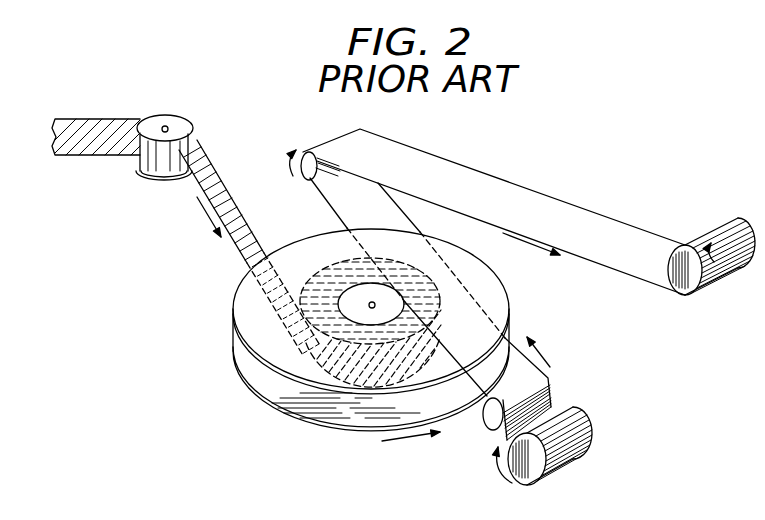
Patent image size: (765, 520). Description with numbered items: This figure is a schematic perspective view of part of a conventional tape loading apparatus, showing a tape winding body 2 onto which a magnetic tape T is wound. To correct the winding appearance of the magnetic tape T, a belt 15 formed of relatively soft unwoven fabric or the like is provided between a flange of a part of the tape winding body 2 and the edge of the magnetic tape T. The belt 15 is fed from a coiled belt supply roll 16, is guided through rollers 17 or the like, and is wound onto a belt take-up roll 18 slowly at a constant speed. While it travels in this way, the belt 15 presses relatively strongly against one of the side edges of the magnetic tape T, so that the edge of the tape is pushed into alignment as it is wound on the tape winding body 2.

The tape winding body 2 is at (271, 370).
The magnetic tape T is at (213, 188).
The belt 15 is at (578, 214).
The coiled belt supply roll 16 is at (577, 460).
The rollers 17 is at (303, 151).
The belt take-up roll 18 is at (692, 294).